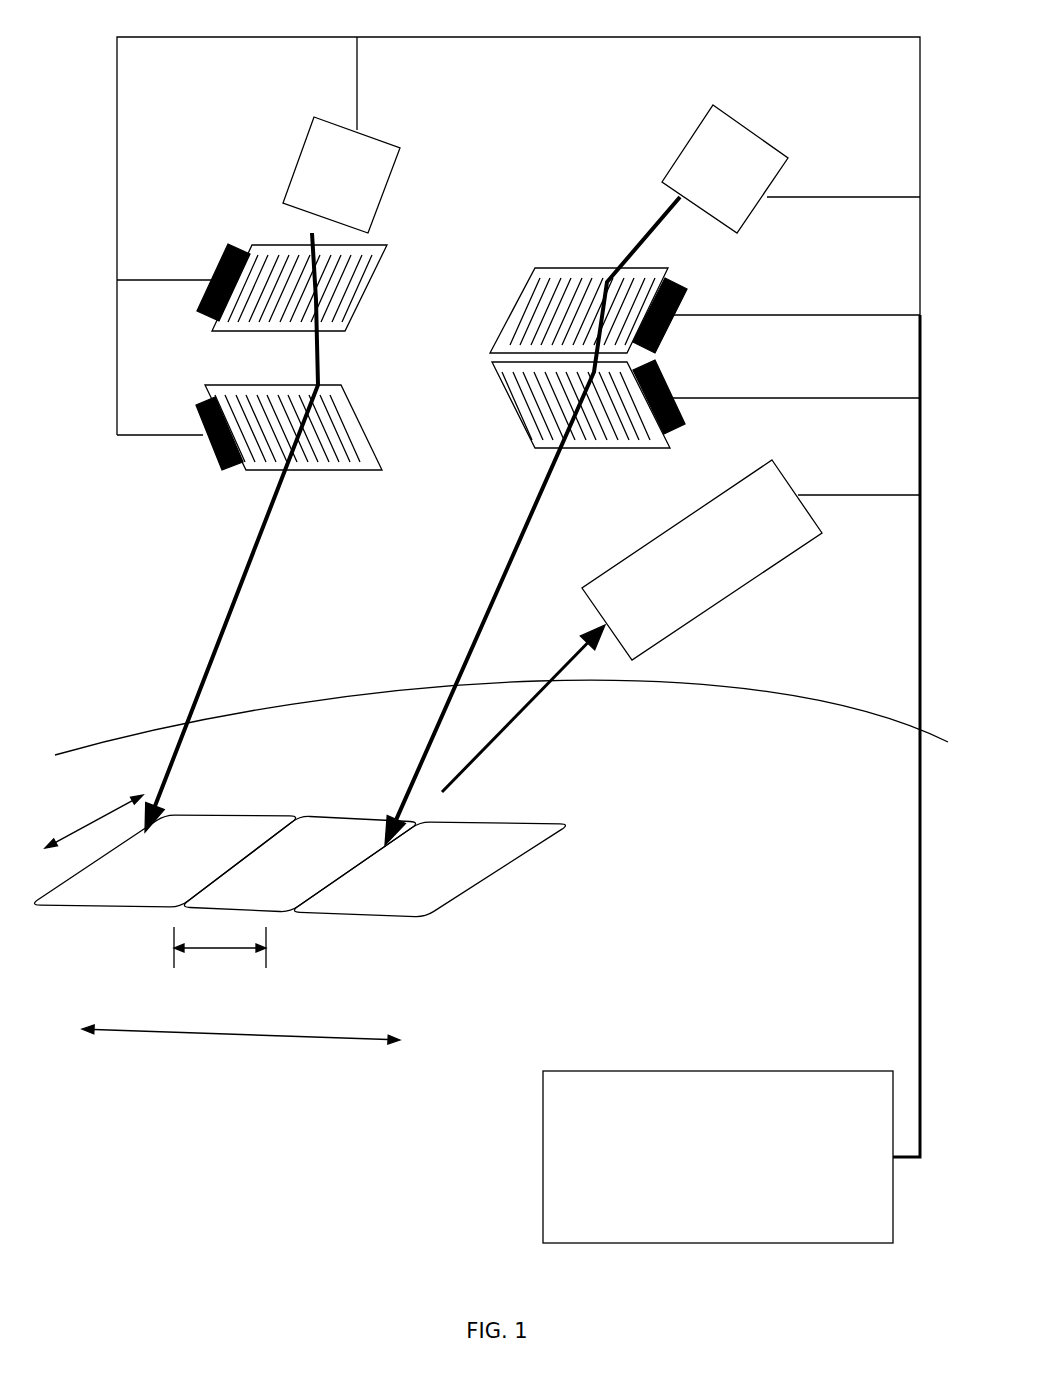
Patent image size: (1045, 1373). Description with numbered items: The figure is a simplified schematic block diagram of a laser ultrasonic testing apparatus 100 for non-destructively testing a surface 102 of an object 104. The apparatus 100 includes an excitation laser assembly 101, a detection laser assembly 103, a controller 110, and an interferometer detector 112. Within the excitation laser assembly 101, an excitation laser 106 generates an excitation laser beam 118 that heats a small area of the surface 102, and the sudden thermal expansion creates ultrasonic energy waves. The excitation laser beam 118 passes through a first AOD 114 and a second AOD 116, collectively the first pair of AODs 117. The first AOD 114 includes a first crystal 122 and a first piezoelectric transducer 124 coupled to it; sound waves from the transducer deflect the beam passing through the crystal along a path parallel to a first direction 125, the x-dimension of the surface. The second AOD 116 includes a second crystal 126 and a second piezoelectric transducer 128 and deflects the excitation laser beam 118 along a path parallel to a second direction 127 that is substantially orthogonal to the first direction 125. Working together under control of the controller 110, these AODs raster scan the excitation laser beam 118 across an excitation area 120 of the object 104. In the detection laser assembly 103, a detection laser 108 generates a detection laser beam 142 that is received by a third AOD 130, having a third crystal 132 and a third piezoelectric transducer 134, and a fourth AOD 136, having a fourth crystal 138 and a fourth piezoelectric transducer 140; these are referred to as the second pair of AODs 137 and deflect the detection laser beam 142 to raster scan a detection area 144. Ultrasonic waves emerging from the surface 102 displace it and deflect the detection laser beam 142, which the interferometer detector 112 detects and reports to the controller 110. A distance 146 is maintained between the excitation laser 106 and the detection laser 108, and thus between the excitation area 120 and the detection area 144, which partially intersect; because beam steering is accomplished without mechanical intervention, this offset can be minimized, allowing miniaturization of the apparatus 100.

The laser ultrasonic testing apparatus 100 is at (98, 53).
The excitation laser assembly 101 is at (318, 306).
The surface 102 is at (376, 828).
The detection laser assembly 103 is at (642, 291).
The object 104 is at (117, 727).
The excitation laser 106 is at (322, 189).
The detection laser 108 is at (706, 179).
The controller 110 is at (699, 1185).
The interferometer detector 112 is at (683, 573).
The first acousto-optic deflector 114 is at (320, 251).
The second acousto-optic deflector 116 is at (268, 437).
The first pair of AODs 117 is at (308, 225).
The excitation laser beam 118 is at (318, 238).
The excitation area 120 is at (230, 812).
The first crystal 122 is at (378, 267).
The first piezoelectric transducer 124 is at (215, 277).
The first direction 125 is at (74, 830).
The second crystal 126 is at (341, 386).
The second direction 127 is at (147, 1032).
The second piezoelectric transducer 128 is at (197, 400).
The third acousto-optic deflector 130 is at (632, 282).
The third crystal 132 is at (600, 272).
The third piezoelectric transducer 134 is at (678, 297).
The fourth acousto-optic deflector 136 is at (643, 437).
The second pair of AODs 137 is at (624, 220).
The fourth crystal 138 is at (592, 450).
The fourth piezoelectric transducer 140 is at (667, 390).
The detection laser beam 142 is at (657, 222).
The detection area 144 is at (507, 818).
The distance 146 is at (220, 950).